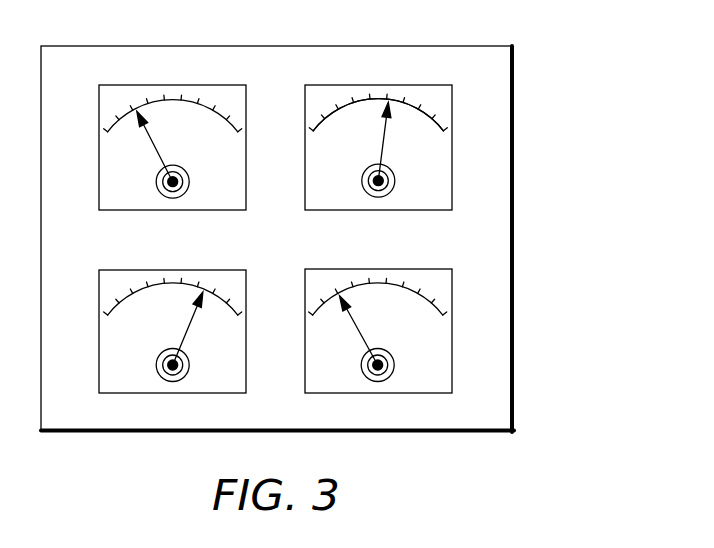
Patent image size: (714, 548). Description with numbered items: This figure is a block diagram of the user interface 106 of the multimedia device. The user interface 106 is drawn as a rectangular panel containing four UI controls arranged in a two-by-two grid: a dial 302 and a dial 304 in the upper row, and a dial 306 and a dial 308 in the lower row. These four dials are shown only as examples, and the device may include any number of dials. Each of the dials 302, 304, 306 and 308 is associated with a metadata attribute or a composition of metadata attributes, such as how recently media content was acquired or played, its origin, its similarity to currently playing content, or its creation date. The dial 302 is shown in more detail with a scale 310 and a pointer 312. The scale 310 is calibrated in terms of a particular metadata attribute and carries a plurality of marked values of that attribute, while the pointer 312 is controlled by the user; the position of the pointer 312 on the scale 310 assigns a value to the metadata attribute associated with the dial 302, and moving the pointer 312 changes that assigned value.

The user interface 106 is at (572, 27).
The dial 302 is at (360, 135).
The dial 304 is at (115, 85).
The dial 306 is at (117, 270).
The dial 308 is at (322, 269).
The scale 310 is at (378, 132).
The pointer 312 is at (409, 141).